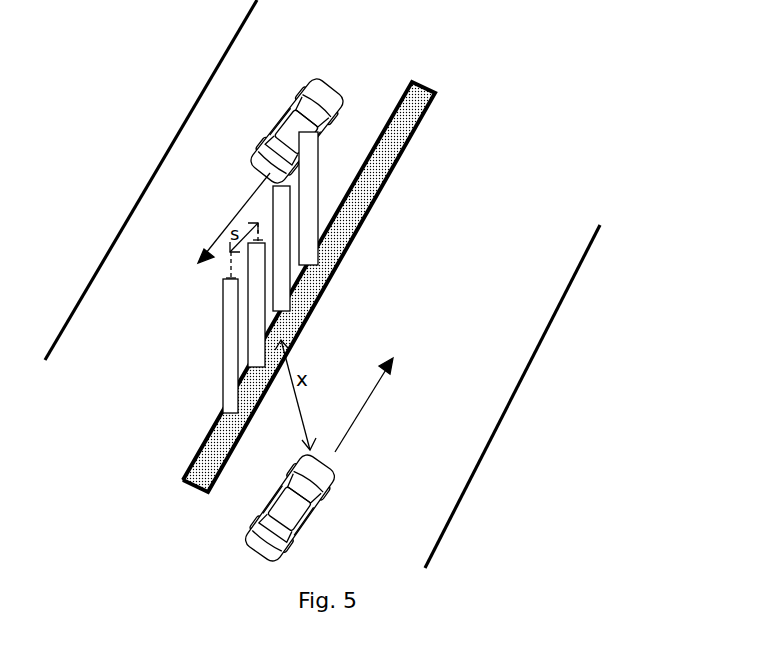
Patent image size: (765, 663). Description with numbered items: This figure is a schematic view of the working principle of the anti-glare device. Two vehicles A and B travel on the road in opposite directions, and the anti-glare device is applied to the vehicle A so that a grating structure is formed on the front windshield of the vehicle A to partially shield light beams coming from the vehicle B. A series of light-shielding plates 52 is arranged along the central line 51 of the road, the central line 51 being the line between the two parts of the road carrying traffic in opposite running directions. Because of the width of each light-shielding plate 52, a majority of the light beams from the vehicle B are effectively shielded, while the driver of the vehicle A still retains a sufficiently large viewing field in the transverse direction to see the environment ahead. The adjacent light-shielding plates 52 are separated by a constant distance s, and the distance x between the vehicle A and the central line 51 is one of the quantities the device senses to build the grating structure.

The central line of the road 51 is at (427, 108).
The light-shielding plate 52 is at (223, 302).
The vehicle A is at (335, 480).
The vehicle B is at (275, 118).